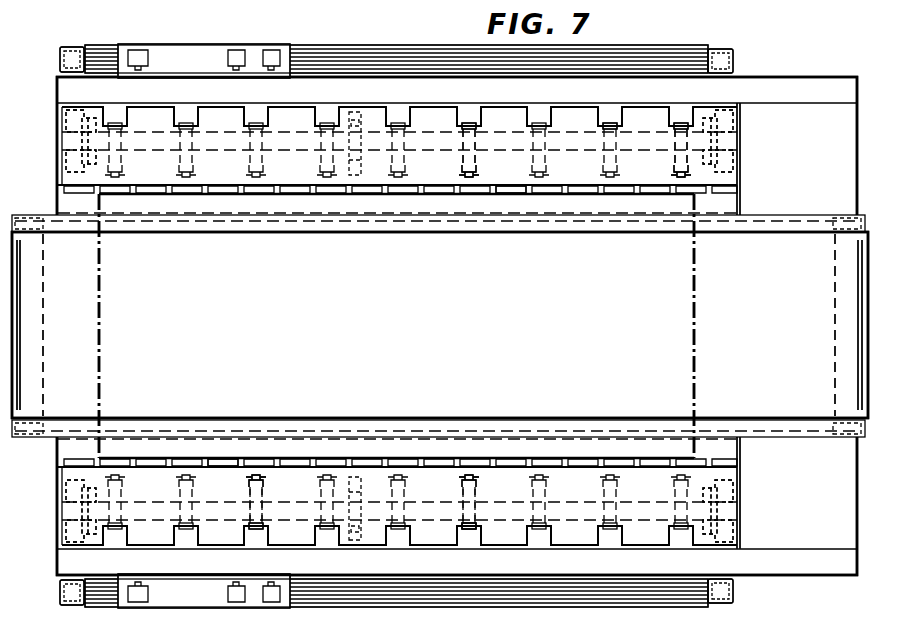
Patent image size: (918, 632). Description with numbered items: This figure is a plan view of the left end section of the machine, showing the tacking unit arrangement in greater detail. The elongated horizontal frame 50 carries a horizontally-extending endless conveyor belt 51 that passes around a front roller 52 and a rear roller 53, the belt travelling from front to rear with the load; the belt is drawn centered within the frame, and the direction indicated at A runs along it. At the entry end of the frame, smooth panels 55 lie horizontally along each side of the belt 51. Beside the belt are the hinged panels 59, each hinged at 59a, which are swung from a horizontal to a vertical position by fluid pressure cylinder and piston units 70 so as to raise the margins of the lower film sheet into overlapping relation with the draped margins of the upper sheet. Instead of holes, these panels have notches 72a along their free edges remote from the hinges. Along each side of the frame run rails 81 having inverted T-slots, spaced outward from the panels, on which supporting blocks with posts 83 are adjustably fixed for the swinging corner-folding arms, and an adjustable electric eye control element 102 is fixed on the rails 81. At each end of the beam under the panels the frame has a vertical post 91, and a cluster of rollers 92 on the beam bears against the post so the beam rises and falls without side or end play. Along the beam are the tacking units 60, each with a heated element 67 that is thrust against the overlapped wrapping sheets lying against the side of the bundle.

The frame 50 is at (762, 578).
The conveyor belt 51 is at (772, 356).
The front roller 52 is at (837, 280).
The rear roller 53 is at (40, 313).
The smooth panels 55 is at (815, 175).
The hinged panels 59 is at (449, 179).
The hinge 59a is at (223, 486).
The tacking unit 60 is at (620, 119).
The heated element 67 is at (680, 176).
The fluid pressure cylinder and piston unit 70 is at (360, 163).
The notches 72a is at (446, 564).
The rails 81 is at (396, 60).
The post 83 is at (60, 52).
The vertical post 91 is at (64, 138).
The rollers 92 is at (64, 114).
The electric eye control element 102 is at (233, 56).
The axis A is at (698, 308).